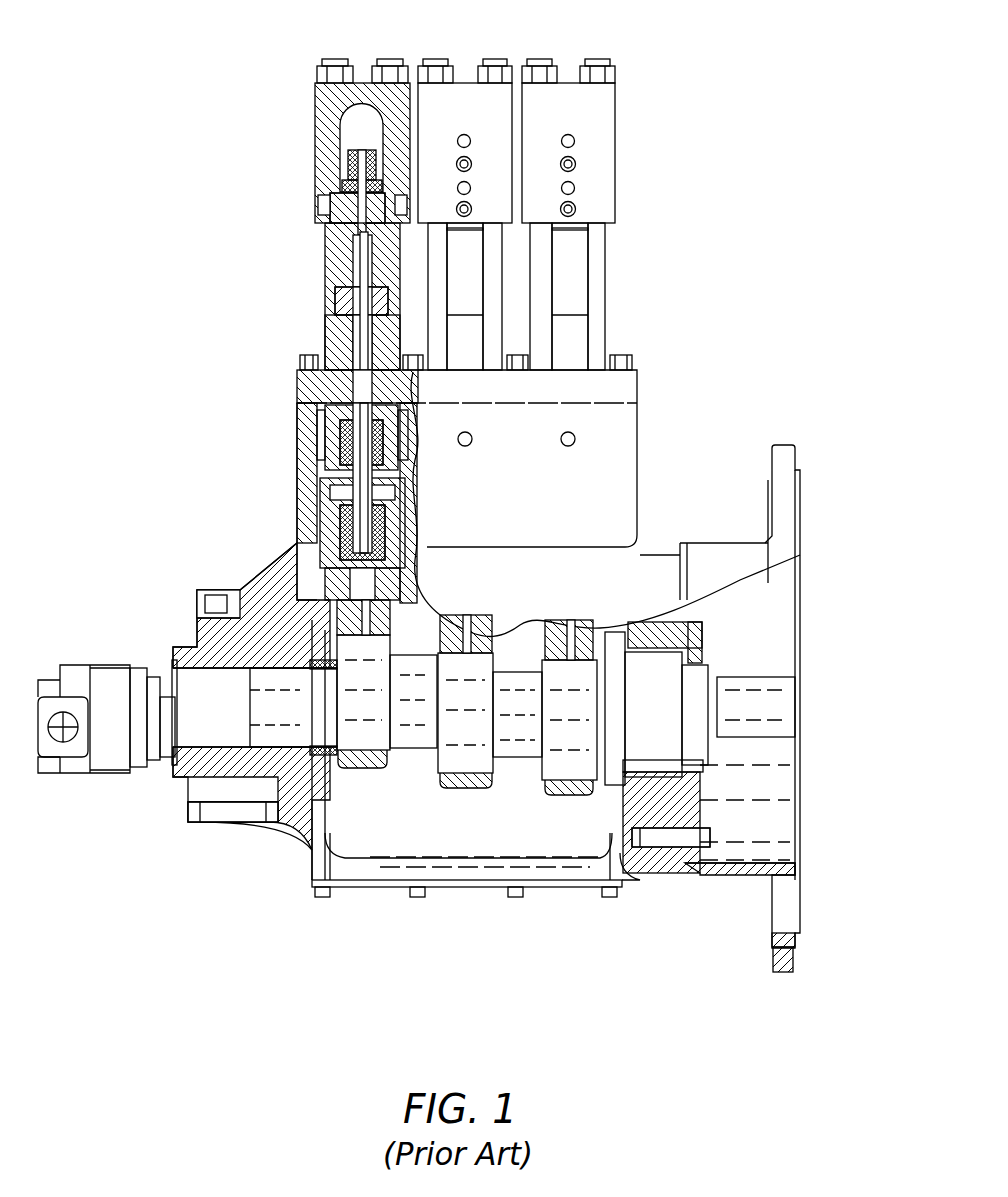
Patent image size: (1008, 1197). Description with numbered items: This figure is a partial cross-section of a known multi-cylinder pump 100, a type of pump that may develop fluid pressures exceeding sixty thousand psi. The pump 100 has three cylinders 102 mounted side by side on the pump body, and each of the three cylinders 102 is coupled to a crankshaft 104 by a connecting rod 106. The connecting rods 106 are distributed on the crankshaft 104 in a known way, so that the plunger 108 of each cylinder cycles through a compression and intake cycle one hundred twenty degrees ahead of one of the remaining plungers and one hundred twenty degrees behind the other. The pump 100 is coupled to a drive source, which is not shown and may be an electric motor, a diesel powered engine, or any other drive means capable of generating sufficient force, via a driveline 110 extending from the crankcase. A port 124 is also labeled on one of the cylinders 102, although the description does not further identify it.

The pump 100 is at (116, 466).
The cylinders 102 is at (360, 55).
The crankshaft 104 is at (415, 730).
The connecting rod 106 is at (353, 730).
The plunger 108 is at (363, 335).
The driveline 110 is at (780, 705).
The port 124 is at (575, 163).